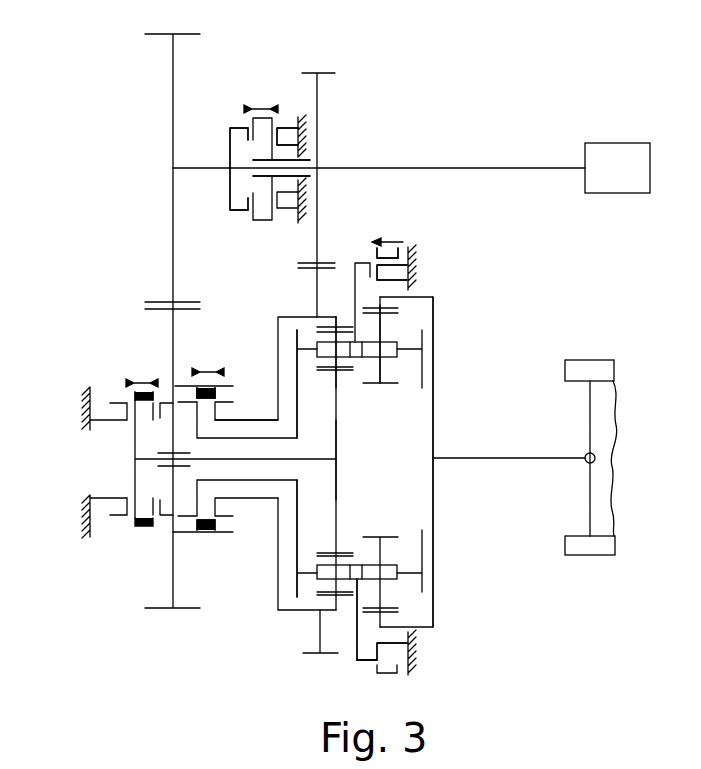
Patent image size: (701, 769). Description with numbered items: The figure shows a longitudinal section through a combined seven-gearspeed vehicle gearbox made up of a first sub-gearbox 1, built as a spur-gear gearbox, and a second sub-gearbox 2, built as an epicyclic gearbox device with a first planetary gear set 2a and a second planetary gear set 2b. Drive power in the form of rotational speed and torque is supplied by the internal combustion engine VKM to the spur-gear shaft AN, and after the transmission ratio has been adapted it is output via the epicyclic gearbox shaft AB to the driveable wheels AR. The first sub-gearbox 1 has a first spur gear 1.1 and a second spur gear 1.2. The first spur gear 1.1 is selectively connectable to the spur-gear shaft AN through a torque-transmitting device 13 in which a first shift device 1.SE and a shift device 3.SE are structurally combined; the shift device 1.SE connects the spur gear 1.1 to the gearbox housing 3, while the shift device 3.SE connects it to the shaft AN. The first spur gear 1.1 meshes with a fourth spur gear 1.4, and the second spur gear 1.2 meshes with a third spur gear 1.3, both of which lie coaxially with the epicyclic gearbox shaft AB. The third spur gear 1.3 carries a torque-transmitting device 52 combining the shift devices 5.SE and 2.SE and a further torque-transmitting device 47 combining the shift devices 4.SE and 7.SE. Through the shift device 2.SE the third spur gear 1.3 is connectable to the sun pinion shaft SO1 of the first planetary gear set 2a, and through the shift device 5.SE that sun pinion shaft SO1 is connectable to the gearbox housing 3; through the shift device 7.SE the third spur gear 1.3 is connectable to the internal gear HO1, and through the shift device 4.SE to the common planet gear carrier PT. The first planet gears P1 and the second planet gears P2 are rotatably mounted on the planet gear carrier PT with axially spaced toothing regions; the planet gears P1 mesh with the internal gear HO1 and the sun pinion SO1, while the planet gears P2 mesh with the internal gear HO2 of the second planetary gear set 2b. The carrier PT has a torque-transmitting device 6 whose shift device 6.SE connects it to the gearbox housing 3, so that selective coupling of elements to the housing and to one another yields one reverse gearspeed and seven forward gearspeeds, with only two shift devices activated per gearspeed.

The first sub-gearbox 1 is at (425, 95).
The first spur gear 1.1 is at (320, 98).
The second spur gear 1.2 is at (173, 58).
The third spur gear 1.3 is at (172, 340).
The fourth spur gear 1.4 is at (318, 632).
The torque-transmitting device 13 is at (262, 82).
The second sub-gearbox 2 is at (460, 308).
The first planetary gear set 2a is at (341, 659).
The second planetary gear set 2b is at (407, 631).
The gearbox housing 3 is at (308, 130).
The torque-transmitting device 6 is at (418, 230).
The torque-transmitting device 47 is at (227, 350).
The torque-transmitting device 52 is at (118, 357).
The shift device 3.SE is at (235, 145).
The first shift device 1.SE is at (289, 113).
The shift device 6.SE is at (387, 231).
The shift device 5.SE is at (99, 375).
The shift device 2.SE is at (145, 375).
The shift device 4.SE is at (201, 374).
The shift device 7.SE is at (247, 374).
The internal gear HO1 is at (275, 358).
The internal gear HO2 is at (433, 412).
The sun pinion shaft SO1 is at (337, 462).
The first planet gears P1 is at (336, 358).
The second planet gears P2 is at (380, 385).
The planet gear carrier PT is at (297, 538).
The spur-gear shaft AN is at (548, 168).
The epicyclic gearbox shaft AB is at (527, 458).
The driveable wheels AR is at (607, 457).
The internal combustion engine VKM is at (617, 168).